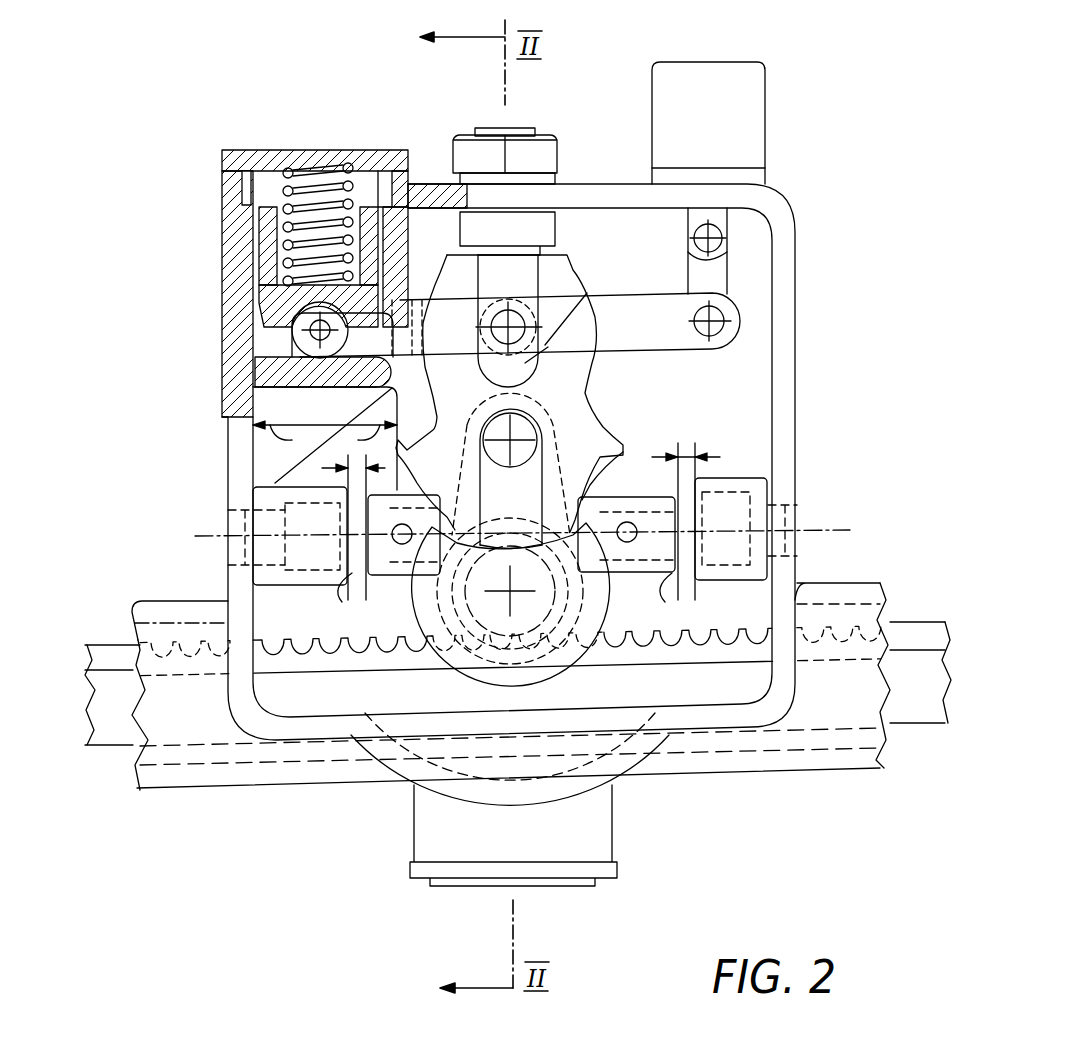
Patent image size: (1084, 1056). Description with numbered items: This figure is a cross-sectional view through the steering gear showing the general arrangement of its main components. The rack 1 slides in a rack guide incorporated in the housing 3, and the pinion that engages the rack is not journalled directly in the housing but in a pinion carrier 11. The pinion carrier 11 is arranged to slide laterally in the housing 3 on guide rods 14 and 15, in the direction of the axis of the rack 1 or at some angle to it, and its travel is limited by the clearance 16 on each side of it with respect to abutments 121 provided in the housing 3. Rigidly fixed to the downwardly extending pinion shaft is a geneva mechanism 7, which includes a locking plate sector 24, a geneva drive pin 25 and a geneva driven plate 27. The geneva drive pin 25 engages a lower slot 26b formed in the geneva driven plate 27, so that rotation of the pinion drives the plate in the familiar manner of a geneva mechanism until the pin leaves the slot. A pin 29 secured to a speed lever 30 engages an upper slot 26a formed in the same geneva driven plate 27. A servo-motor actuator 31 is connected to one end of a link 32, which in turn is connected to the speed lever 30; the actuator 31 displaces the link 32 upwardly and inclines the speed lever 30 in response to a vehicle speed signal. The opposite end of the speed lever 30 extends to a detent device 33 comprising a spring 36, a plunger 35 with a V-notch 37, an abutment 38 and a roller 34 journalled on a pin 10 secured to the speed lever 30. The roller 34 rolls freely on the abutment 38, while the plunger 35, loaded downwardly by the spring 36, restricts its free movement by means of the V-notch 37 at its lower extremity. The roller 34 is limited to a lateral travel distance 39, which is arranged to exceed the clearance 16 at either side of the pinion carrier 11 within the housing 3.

The rack 1 is at (116, 735).
The housing 3 is at (313, 730).
The geneva mechanism 7 is at (612, 395).
The pin 10 is at (296, 340).
The pinion carrier 11 is at (389, 598).
The guide rod 14 is at (265, 548).
The guide rod 15 is at (797, 531).
The clearance 16 is at (402, 450).
The locking plate sector 24 is at (560, 657).
The geneva drive pin 25 is at (572, 450).
The upper slot 26a is at (587, 293).
The lower slot 26b is at (623, 452).
The geneva driven plate 27 is at (540, 478).
The pin 29 is at (535, 300).
The speed lever 30 is at (683, 304).
The servo-motor actuator 31 is at (752, 112).
The link 32 is at (736, 270).
The detent device 33 is at (232, 140).
The roller 34 is at (283, 352).
The plunger 35 is at (222, 222).
The spring 36 is at (312, 170).
The V-notch 37 is at (322, 303).
The abutment 38 is at (258, 390).
The travel distance 39 is at (325, 435).
The abutments 121 is at (533, 597).